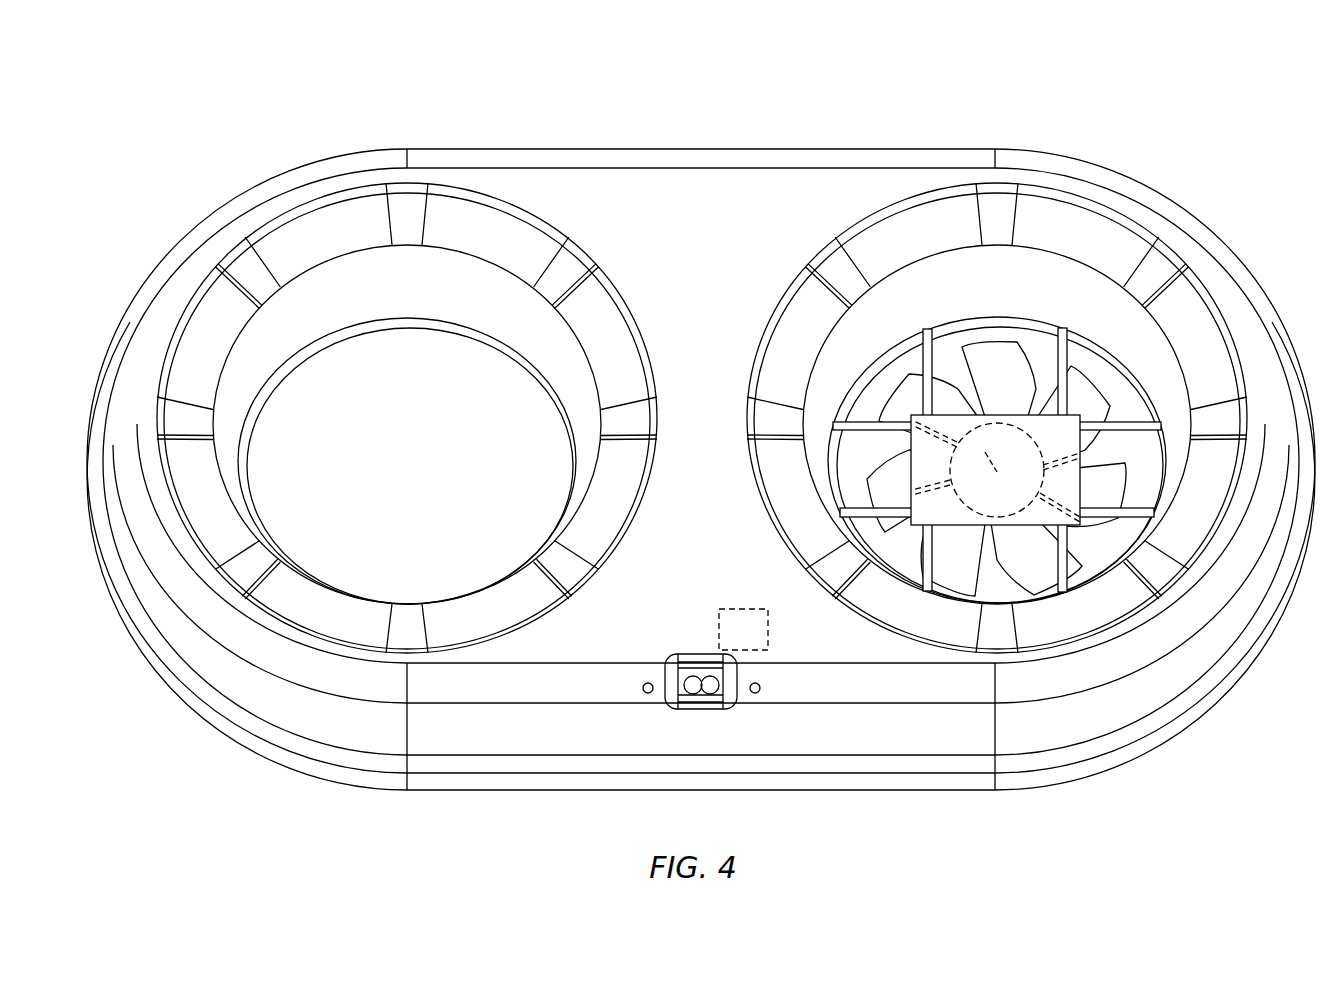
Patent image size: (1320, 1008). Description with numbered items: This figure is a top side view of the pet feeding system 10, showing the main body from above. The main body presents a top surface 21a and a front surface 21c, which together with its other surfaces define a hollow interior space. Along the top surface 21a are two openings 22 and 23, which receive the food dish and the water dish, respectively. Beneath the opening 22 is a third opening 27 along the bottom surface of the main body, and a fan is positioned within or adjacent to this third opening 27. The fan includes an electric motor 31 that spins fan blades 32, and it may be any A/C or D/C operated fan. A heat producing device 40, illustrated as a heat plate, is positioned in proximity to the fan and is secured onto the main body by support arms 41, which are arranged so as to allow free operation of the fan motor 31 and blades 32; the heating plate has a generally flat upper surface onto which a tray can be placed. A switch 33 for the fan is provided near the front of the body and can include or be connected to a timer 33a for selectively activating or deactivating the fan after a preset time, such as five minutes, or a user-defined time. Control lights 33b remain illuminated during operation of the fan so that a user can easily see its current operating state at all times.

The ventilation apparatus 10 is at (383, 118).
The top surface 21a is at (686, 269).
The front surface 21c is at (578, 792).
The opening 22 is at (916, 298).
The opening 23 is at (347, 400).
The third opening 27 is at (996, 430).
The electric motor 31 is at (957, 430).
The fan blades 32 is at (998, 375).
The connector 33 is at (700, 672).
The timer 33a is at (742, 609).
The control lights 33b is at (648, 694).
The heat producing device 40 is at (1053, 435).
The support arms 41 is at (1140, 512).